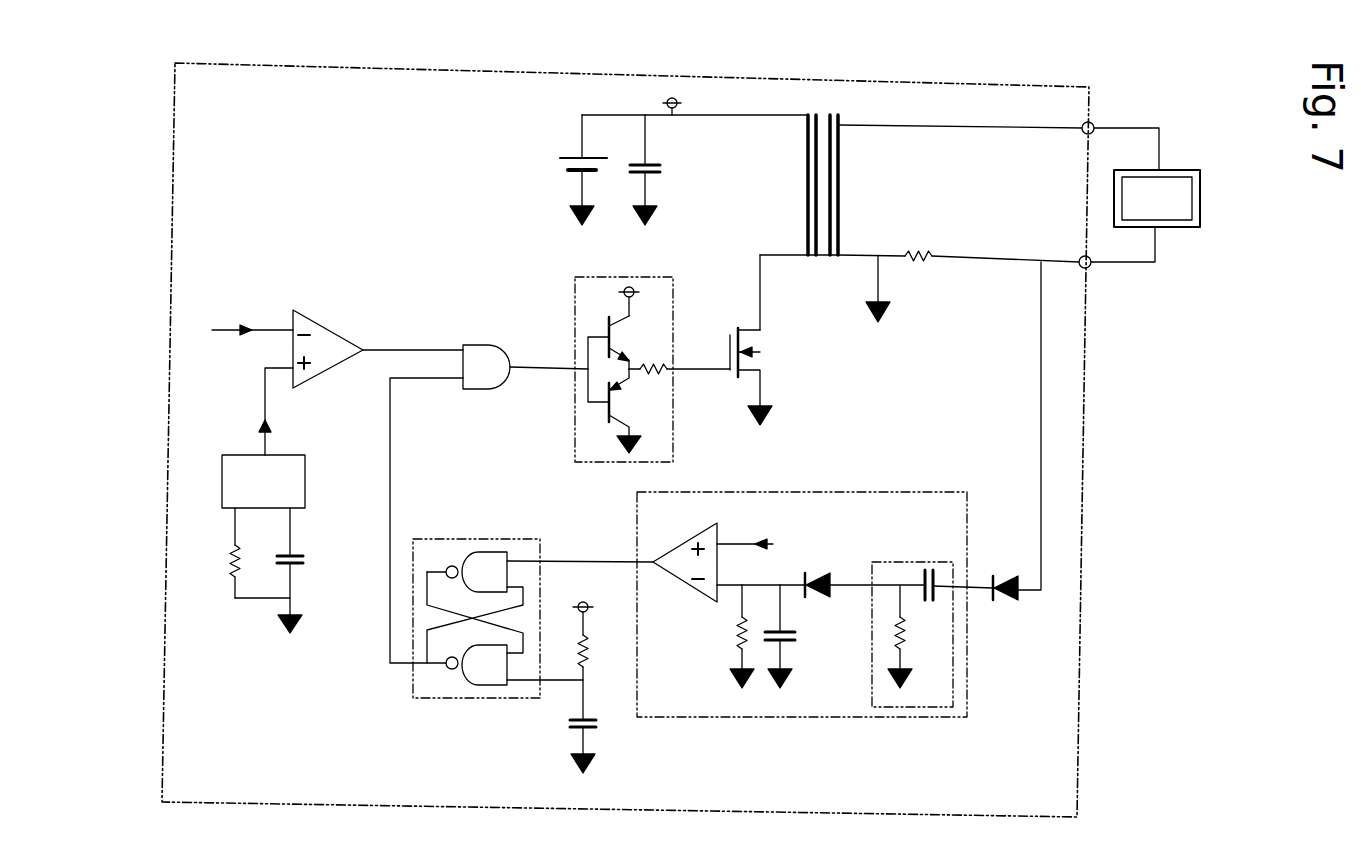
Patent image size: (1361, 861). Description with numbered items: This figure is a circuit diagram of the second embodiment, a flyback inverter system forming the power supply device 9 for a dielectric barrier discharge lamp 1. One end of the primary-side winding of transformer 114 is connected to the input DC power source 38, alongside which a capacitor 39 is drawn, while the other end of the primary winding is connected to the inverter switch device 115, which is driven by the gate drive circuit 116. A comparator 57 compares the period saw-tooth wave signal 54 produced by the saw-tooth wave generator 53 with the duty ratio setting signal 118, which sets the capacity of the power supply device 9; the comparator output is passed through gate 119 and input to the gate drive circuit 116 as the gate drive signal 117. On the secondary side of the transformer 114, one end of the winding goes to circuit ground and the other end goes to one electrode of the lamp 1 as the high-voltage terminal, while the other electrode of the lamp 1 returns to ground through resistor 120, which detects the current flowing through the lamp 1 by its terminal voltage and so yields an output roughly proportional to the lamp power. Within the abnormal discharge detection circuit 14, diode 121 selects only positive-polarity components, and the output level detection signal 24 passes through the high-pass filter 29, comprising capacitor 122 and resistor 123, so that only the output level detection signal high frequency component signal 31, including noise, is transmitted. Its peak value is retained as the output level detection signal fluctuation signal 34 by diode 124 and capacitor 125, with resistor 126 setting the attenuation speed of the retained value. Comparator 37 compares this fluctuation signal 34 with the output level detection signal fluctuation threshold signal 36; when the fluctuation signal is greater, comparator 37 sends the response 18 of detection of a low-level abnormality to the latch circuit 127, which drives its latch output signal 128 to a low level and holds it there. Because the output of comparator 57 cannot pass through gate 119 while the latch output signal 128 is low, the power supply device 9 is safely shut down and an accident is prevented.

The dielectric barrier discharge lamp 1 is at (1141, 209).
The power supply device 9 is at (655, 440).
The abnormal discharge detection circuit 14 is at (802, 576).
The response of detection of a low-level abnormality 18 is at (580, 531).
The output level detection signal 24 is at (999, 426).
The high-pass filter 29 is at (912, 674).
The output level detection signal high frequency component signal 31 is at (865, 563).
The output level detection signal fluctuation signal 34 is at (770, 557).
The output level detection signal fluctuation threshold signal 36 is at (765, 524).
The comparator 37 is at (684, 586).
The input DC power source 38 is at (645, 161).
The capacitor 39 is at (687, 170).
The saw-tooth wave generator 53 is at (263, 544).
The period saw-tooth wave signal 54 is at (241, 411).
The comparator 57 is at (333, 374).
The transformer 114 is at (875, 185).
The inverter switch device 115 is at (731, 340).
The gate drive circuit 116 is at (670, 371).
The gate drive signal 117 is at (549, 337).
The duty ratio setting signal 118 is at (252, 300).
The gate 119 is at (436, 337).
The resistor 120 is at (992, 232).
The diode 121 is at (1030, 627).
The capacitor 122 is at (945, 556).
The resistor 123 is at (971, 656).
The diode 124 is at (841, 632).
The capacitor 125 is at (817, 652).
The resistor 126 is at (707, 644).
The latch circuit 127 is at (457, 656).
The latch output signal 128 is at (429, 520).